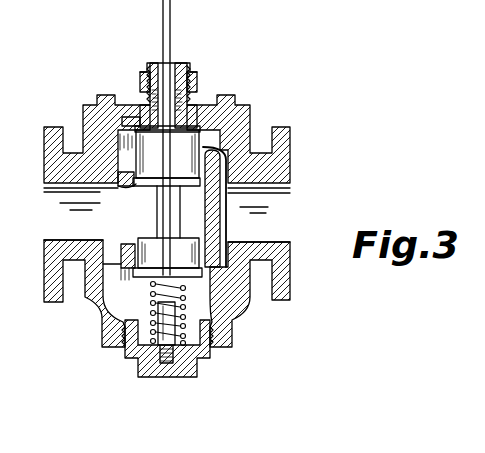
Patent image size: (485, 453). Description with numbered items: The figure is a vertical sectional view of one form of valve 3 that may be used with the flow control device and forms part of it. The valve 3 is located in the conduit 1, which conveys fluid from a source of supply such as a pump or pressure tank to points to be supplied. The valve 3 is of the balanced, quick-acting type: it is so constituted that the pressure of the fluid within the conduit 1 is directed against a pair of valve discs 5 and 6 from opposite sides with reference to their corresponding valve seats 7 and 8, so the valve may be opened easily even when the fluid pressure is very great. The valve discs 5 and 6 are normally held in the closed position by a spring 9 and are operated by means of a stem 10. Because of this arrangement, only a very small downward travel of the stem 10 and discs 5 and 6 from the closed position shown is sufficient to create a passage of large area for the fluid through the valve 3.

The conduit 1 is at (278, 213).
The valve 3 is at (222, 318).
The valve disc 5 is at (181, 185).
The valve disc 6 is at (183, 266).
The valve seat 7 is at (134, 184).
The valve seat 8 is at (128, 250).
The spring 9 is at (104, 349).
The stem 10 is at (171, 30).